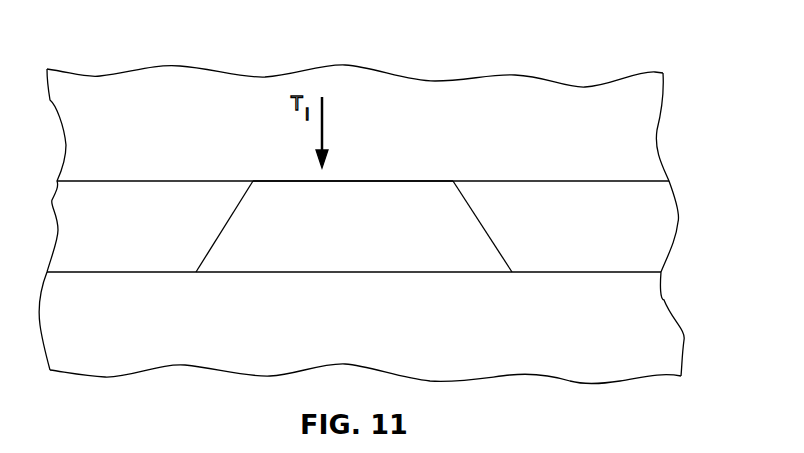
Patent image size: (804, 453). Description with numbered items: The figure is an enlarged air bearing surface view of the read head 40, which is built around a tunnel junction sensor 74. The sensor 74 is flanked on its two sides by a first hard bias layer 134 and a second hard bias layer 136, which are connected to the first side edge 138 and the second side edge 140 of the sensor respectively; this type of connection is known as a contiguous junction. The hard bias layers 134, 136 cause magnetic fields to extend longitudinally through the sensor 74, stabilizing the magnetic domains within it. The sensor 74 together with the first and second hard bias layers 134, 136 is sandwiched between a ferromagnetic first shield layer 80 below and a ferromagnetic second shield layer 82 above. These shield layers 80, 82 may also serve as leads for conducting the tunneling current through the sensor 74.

The read head 40 is at (143, 56).
The second shield layer 82 is at (648, 106).
The first shield layer 80 is at (160, 355).
The first hard bias layer 134 is at (135, 193).
The second hard bias layer 136 is at (583, 193).
The first side edge 138 is at (229, 213).
The second side edge 140 is at (477, 214).
The tunnel junction sensor 74 is at (408, 181).